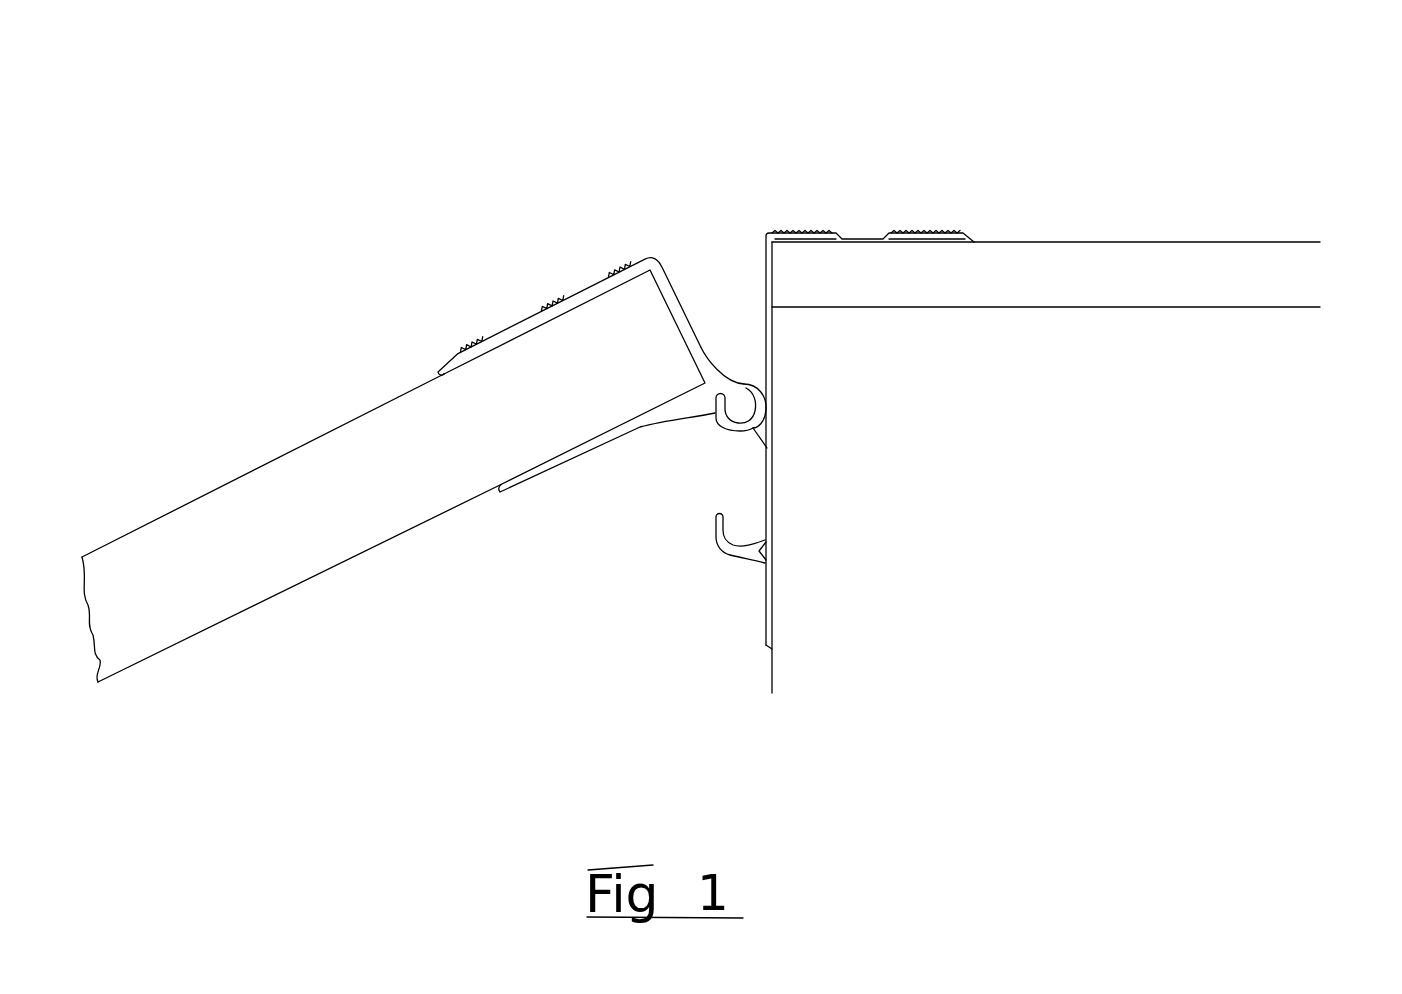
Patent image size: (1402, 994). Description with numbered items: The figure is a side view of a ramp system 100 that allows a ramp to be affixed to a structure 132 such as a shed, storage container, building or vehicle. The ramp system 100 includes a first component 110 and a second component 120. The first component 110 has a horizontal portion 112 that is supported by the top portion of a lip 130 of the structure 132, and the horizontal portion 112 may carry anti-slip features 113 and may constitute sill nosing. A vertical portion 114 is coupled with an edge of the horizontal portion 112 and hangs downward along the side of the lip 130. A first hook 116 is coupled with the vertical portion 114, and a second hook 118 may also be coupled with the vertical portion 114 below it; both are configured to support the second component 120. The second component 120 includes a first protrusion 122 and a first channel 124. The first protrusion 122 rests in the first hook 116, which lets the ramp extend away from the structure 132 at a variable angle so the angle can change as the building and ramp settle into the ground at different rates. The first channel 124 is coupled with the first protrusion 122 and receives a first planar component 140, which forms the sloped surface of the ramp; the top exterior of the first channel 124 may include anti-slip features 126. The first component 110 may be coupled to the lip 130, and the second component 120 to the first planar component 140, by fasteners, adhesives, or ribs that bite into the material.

The ramp system 100 is at (1028, 88).
The first component 110 is at (864, 224).
The horizontal portion 112 is at (963, 236).
The anti-slip features 113 is at (943, 233).
The vertical portion 114 is at (764, 272).
The first hook 116 is at (717, 420).
The second hook 118 is at (723, 547).
The second component 120 is at (493, 509).
The first protrusion 122 is at (742, 383).
The first channel 124 is at (464, 415).
The anti-slip features 126 is at (552, 298).
The lip 130 is at (788, 272).
The structure 132 is at (1265, 231).
The first planar component 140 is at (180, 507).